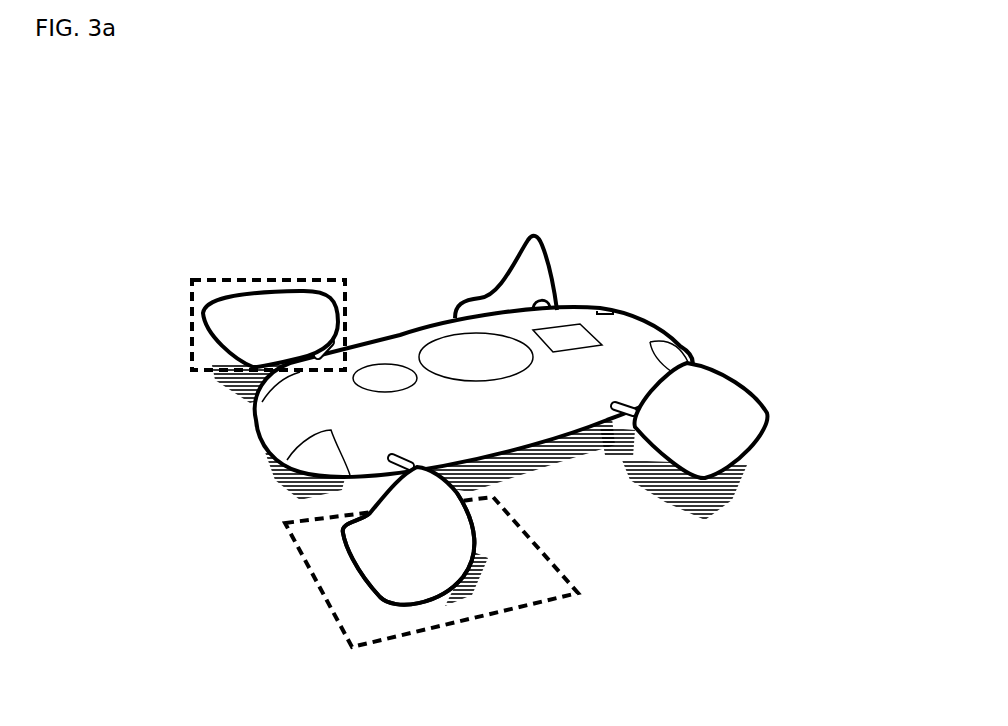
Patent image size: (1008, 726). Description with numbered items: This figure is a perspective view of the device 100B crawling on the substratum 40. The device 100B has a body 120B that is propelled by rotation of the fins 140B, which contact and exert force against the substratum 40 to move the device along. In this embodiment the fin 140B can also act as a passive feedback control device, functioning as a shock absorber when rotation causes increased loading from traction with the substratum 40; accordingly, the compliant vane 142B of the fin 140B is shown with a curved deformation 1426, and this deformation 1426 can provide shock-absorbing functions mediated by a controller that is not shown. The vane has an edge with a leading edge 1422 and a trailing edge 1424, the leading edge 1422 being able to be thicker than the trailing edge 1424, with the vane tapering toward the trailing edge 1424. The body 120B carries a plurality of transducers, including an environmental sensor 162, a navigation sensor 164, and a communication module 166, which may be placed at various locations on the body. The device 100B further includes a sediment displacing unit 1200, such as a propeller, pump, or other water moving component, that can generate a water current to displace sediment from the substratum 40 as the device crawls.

The device 100B is at (777, 250).
The body 120B is at (622, 333).
The navigation sensor 164 is at (392, 371).
The sediment displacing unit 1200 is at (478, 352).
The communication module 166 is at (564, 327).
The environmental sensor 162 is at (690, 348).
The fin 140B is at (223, 279).
The compliant vane 142B is at (262, 317).
The substratum 40 is at (578, 587).
The leading edge 1422 is at (477, 517).
The trailing edge 1424 is at (342, 553).
The curved deformation 1426 is at (389, 552).